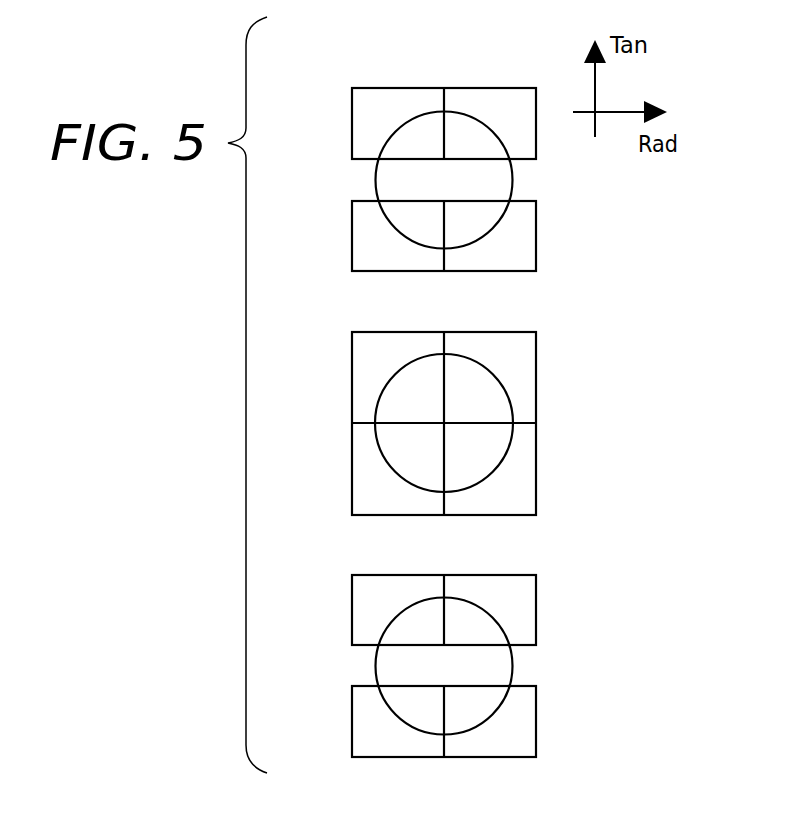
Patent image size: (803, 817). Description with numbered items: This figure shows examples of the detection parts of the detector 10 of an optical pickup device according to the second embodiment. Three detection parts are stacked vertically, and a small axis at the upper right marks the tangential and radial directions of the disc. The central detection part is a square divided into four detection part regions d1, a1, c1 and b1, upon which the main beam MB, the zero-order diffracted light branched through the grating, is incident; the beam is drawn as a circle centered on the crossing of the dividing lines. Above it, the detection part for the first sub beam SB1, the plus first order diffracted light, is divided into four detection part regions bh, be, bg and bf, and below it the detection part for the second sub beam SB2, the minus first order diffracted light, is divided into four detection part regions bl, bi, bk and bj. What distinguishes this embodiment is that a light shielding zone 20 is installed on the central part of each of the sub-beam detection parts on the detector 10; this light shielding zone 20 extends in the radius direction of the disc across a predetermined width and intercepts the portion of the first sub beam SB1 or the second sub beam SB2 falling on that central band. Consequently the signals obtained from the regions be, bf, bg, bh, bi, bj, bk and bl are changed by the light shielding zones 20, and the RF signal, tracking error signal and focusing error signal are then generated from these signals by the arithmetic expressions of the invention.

The detector 10 is at (460, 63).
The light shielding zone 20 is at (357, 178).
The first sub beam SB1 is at (482, 179).
The main beam MB is at (478, 423).
The second sub beam SB2 is at (482, 666).
The detection part region bh is at (373, 108).
The detection part region be is at (519, 108).
The detection part region bg is at (373, 251).
The detection part region bf is at (519, 251).
The detection part region d1 is at (373, 348).
The detection part region a1 is at (519, 348).
The detection part region c1 is at (372, 498).
The detection part region b1 is at (519, 498).
The detection part region bl is at (370, 591).
The detection part region bi is at (522, 591).
The detection part region bk is at (373, 739).
The detection part region bj is at (521, 736).